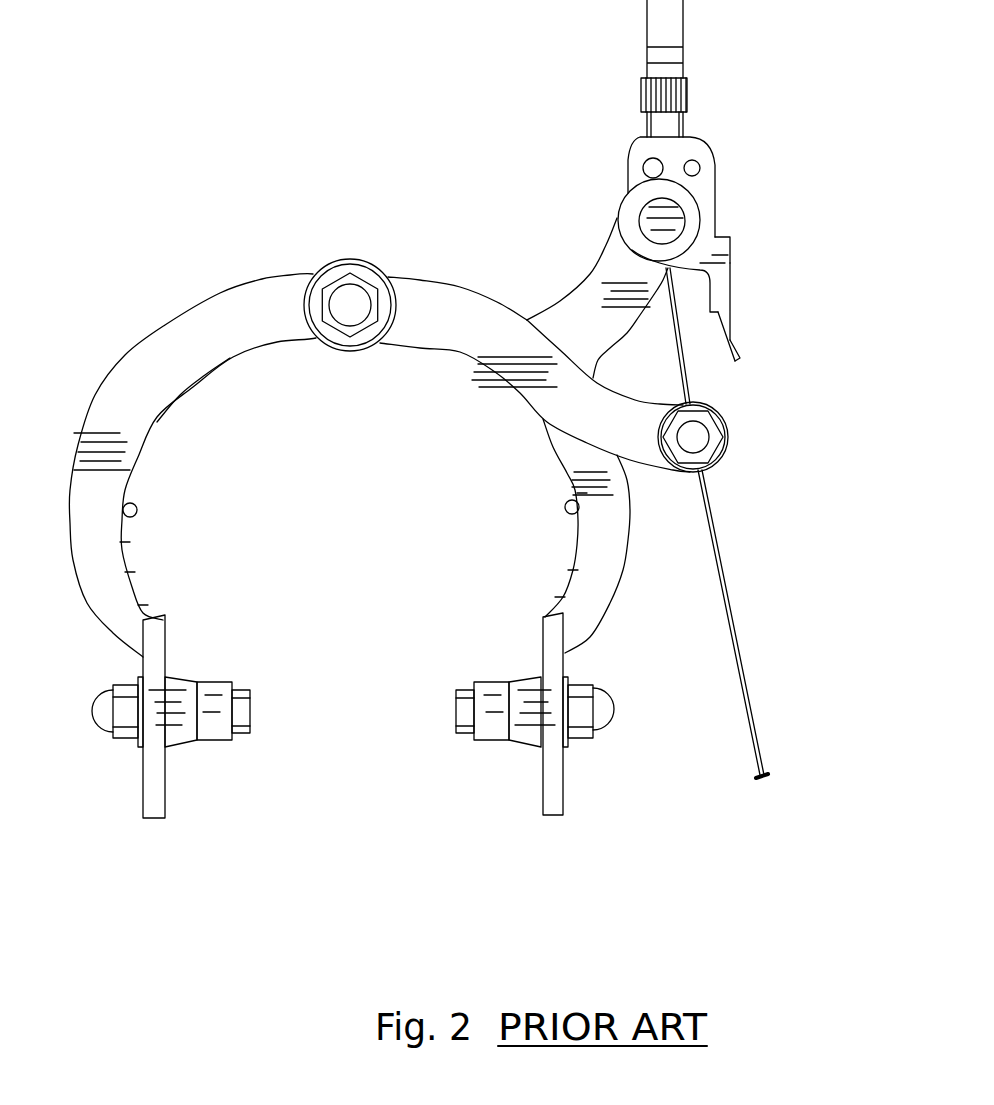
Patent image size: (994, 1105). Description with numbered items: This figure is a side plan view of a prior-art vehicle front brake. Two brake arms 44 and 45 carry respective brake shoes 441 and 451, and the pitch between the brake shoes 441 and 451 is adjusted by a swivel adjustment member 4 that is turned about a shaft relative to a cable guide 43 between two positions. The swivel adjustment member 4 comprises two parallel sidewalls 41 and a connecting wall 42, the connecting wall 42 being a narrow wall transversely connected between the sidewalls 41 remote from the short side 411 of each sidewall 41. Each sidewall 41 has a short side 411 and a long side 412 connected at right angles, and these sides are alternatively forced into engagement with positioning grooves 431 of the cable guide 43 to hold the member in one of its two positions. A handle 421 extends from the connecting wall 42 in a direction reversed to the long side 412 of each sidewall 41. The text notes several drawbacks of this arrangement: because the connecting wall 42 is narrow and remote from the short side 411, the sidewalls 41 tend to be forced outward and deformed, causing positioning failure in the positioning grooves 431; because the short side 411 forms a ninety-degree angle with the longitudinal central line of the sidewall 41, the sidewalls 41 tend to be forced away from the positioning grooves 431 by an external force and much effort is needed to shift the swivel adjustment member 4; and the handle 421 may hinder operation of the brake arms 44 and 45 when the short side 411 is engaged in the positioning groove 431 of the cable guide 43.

The swivel adjustment member 4 is at (742, 270).
The sidewall 41 is at (717, 188).
The short side 411 is at (700, 170).
The long side 412 is at (722, 227).
The connecting wall 42 is at (732, 283).
The handle 421 is at (740, 343).
The cable guide 43 is at (693, 143).
The positioning groove 431 is at (663, 153).
The brake arm 44 is at (92, 605).
The brake arm 45 is at (610, 605).
The brake shoe 441 is at (220, 737).
The brake shoe 451 is at (490, 737).